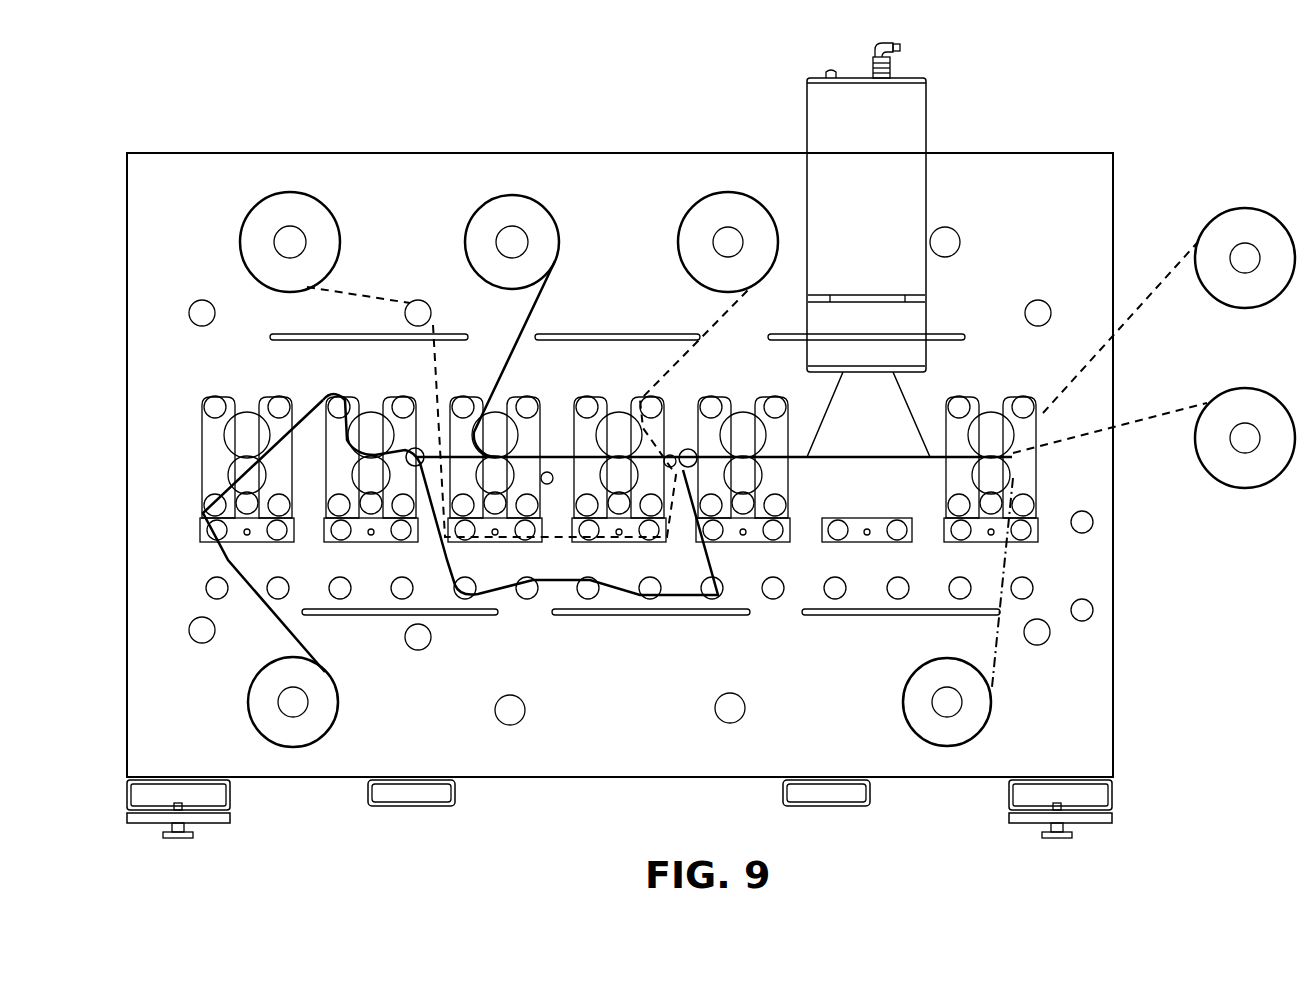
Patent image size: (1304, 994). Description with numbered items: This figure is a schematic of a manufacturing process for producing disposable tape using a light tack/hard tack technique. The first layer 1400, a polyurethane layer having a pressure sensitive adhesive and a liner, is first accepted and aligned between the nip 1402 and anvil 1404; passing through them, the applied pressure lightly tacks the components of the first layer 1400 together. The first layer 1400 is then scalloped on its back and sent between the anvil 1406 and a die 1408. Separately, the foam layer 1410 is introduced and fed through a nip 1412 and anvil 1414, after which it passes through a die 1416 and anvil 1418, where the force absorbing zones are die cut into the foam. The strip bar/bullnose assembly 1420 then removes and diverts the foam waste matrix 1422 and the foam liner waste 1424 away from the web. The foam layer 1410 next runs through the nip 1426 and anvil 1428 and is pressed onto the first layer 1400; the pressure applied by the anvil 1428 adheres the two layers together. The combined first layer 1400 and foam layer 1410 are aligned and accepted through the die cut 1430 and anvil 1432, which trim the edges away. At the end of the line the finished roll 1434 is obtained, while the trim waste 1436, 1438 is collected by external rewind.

The first layer 1400 is at (267, 610).
The nip 1402 is at (243, 438).
The anvil 1404 is at (243, 478).
The anvil 1406 is at (370, 435).
The die 1408 is at (372, 478).
The foam layer 1410 is at (527, 215).
The nip 1412 is at (498, 438).
The anvil 1414 is at (497, 480).
The die 1416 is at (617, 437).
The anvil 1418 is at (625, 480).
The strip bar/bullnose assembly 1420 is at (685, 450).
The foam waste matrix 1422 is at (724, 212).
The foam liner waste 1424 is at (317, 213).
The nip 1426 is at (742, 430).
The anvil 1428 is at (742, 475).
The die cut 1430 is at (990, 438).
The anvil 1432 is at (995, 485).
The finished roll 1434 is at (975, 700).
The trim waste 1436 is at (1253, 226).
The trim waste 1438 is at (1252, 470).